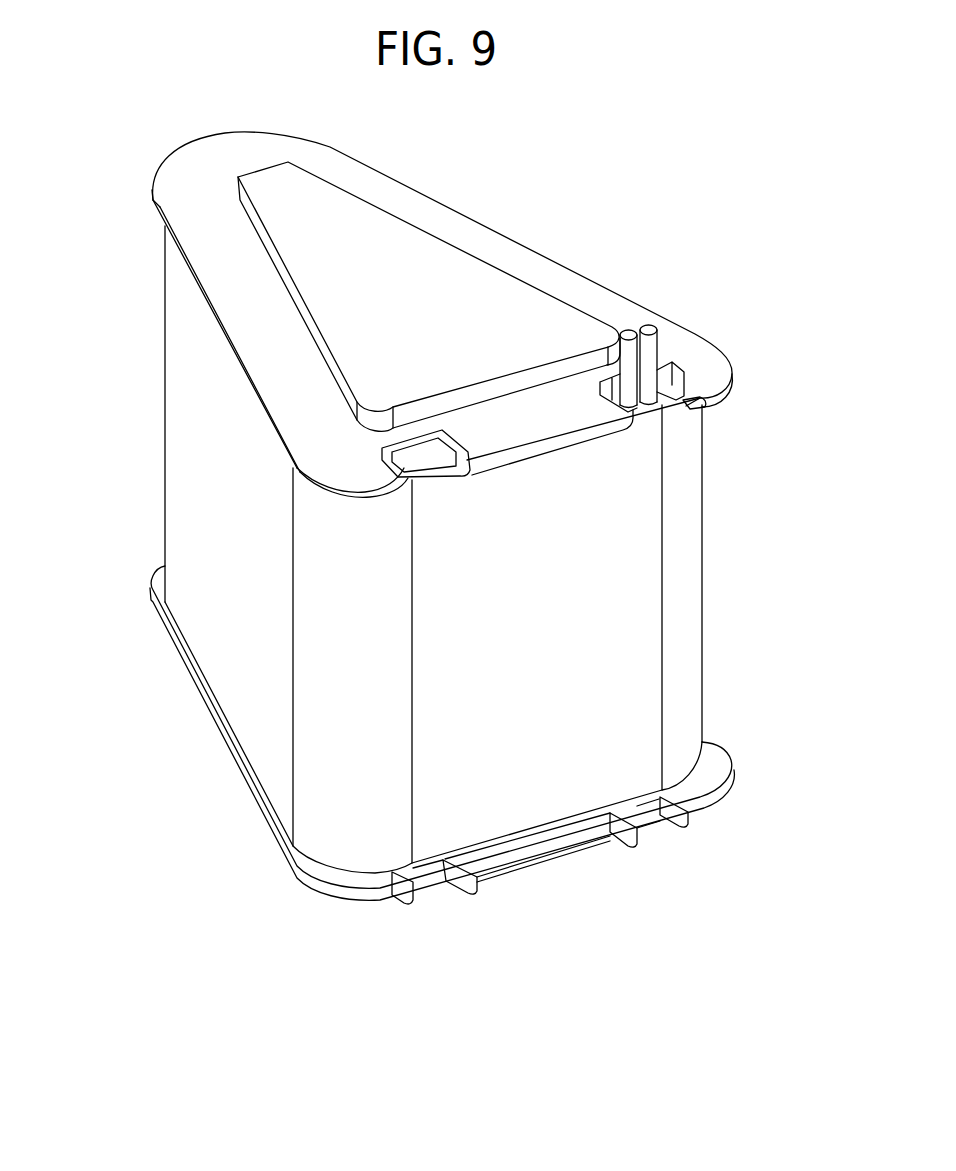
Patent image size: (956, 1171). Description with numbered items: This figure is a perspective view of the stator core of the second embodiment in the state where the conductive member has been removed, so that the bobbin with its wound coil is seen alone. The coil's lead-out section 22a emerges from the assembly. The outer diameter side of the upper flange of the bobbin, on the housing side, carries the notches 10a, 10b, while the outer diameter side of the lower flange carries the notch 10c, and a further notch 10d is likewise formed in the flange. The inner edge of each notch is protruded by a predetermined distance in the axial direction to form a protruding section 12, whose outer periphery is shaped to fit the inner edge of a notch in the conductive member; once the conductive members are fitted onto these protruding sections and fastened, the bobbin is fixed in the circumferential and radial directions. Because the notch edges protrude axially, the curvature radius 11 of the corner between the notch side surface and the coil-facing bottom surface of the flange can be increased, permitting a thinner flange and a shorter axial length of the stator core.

The lead-out section 22a is at (648, 343).
The protruding section 12 is at (668, 378).
The notch 10a is at (700, 406).
The notch 10b is at (380, 458).
The notch 10c is at (453, 893).
The notch 10d is at (664, 827).
The curvature radius R 11 is at (703, 802).